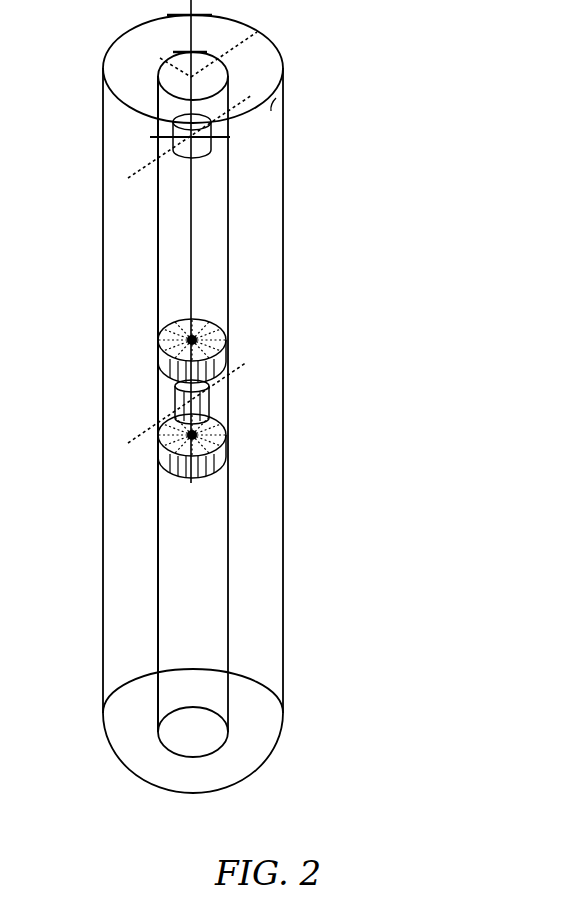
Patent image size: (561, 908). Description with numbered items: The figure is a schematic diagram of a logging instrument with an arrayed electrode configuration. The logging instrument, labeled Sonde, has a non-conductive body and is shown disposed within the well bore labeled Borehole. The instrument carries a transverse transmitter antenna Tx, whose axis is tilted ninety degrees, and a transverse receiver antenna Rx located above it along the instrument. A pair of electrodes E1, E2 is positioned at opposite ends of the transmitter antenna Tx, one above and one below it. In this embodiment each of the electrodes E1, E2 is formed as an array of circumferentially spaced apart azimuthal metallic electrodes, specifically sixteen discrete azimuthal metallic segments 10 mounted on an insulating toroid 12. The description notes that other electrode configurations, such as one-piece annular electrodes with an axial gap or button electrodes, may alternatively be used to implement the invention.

The azimuthal metallic segments 10 is at (158, 350).
The insulating toroid 12 is at (158, 373).
The transverse receiver antenna Rx is at (209, 136).
The transverse transmitter antenna Tx is at (221, 402).
The electrode E1 is at (210, 351).
The electrode E2 is at (210, 446).
The logging instrument Sonde is at (230, 208).
The borehole Borehole is at (283, 608).